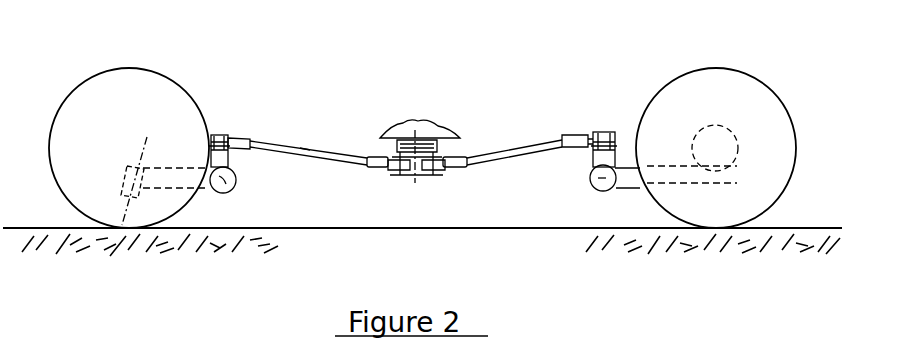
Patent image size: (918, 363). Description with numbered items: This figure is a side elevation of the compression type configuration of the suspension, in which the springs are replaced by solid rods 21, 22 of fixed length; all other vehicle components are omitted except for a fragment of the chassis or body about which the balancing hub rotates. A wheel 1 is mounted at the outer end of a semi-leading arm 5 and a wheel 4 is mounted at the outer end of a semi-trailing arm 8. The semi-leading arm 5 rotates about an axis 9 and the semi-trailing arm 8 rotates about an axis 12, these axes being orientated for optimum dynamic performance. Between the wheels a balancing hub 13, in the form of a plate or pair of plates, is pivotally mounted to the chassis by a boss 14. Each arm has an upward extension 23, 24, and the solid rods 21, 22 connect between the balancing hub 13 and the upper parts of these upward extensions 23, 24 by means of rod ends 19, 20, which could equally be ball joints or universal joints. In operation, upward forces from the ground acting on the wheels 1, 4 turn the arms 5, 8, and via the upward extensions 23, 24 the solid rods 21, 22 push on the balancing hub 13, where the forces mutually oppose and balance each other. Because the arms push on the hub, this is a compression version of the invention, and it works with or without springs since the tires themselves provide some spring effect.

The wheel 1 is at (72, 105).
The wheel 4 is at (752, 91).
The semi-leading arm 5 is at (204, 188).
The semi-trailing arm 8 is at (633, 189).
The axis 9 is at (232, 188).
The axis 12 is at (592, 182).
The balancing hub 13 is at (423, 177).
The boss 14 is at (430, 131).
The rod end 19 is at (238, 135).
The rod end 20 is at (378, 156).
The solid rod 21 is at (303, 150).
The solid rod 22 is at (513, 146).
The upward extension 23 is at (228, 157).
The upward extension 24 is at (595, 152).